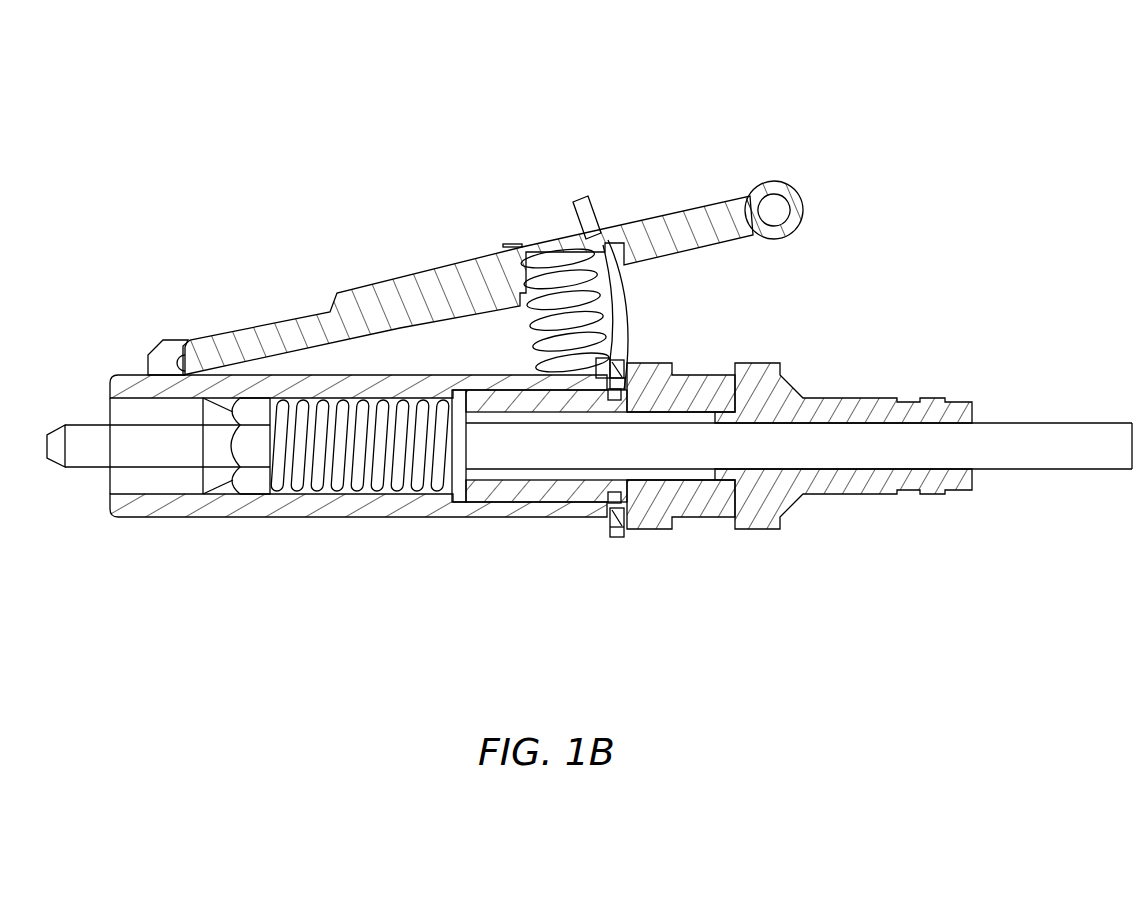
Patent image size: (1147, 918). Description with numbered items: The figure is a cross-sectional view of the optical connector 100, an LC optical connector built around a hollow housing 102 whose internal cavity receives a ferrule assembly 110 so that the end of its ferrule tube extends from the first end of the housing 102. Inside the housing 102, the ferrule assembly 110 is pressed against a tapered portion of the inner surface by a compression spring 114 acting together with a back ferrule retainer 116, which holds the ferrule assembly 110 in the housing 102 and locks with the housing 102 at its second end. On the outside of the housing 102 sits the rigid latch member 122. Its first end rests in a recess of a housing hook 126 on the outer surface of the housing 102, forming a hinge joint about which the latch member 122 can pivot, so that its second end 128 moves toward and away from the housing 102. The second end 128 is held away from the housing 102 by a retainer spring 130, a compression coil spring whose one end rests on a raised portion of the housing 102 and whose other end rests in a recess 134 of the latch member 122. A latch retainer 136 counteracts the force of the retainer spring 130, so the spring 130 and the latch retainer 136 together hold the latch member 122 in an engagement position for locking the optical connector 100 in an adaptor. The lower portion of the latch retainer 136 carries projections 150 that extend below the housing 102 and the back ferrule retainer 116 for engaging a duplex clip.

The optical connector 100 is at (236, 91).
The housing 102 is at (398, 518).
The ferrule assembly 110 is at (682, 420).
The compression spring 114 is at (326, 478).
The back ferrule retainer 116 is at (795, 378).
The rigid latch member 122 is at (358, 288).
The housing hook 126 is at (150, 344).
The second end of latch member 128 is at (700, 206).
The retainer spring 130 is at (537, 329).
The recess of the latch member 134 is at (530, 258).
The latch retainer 136 is at (597, 212).
The projections 150 is at (617, 537).